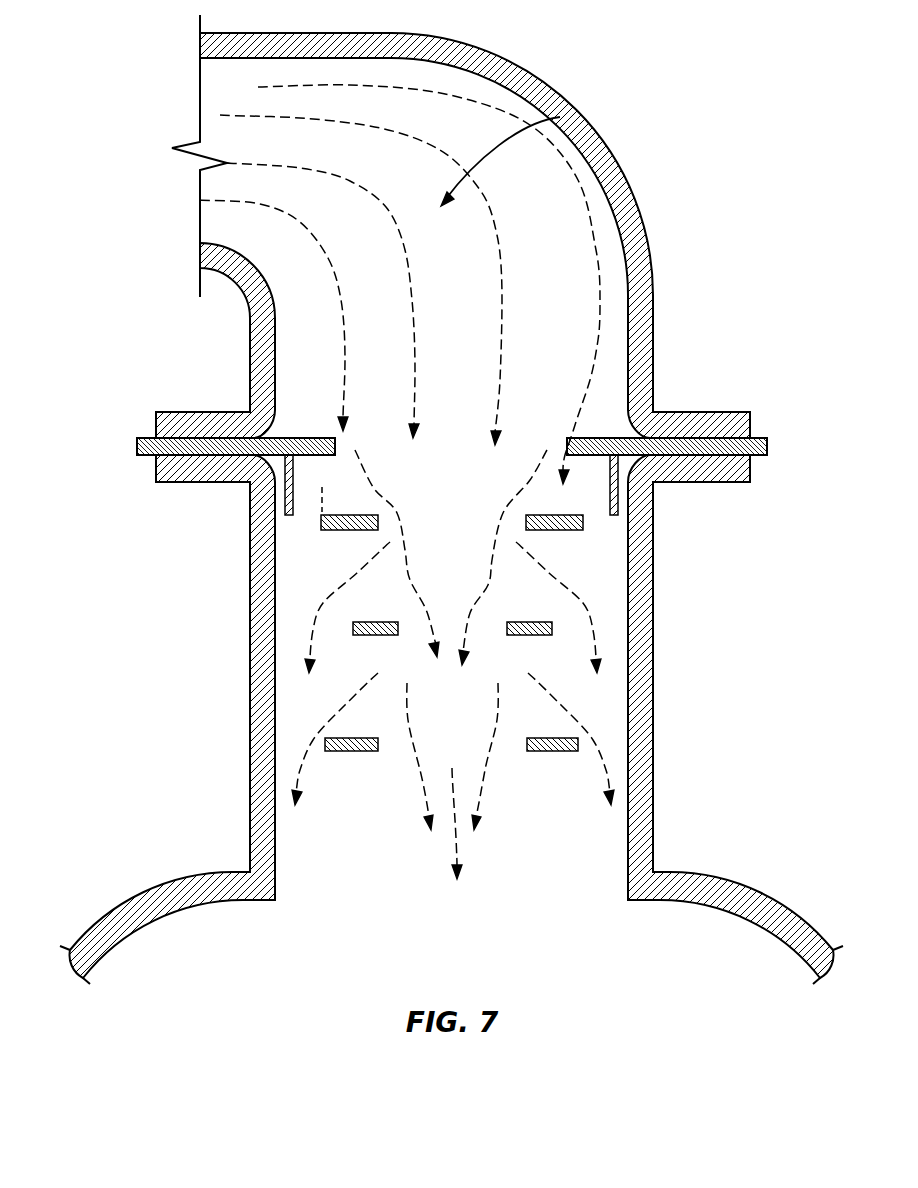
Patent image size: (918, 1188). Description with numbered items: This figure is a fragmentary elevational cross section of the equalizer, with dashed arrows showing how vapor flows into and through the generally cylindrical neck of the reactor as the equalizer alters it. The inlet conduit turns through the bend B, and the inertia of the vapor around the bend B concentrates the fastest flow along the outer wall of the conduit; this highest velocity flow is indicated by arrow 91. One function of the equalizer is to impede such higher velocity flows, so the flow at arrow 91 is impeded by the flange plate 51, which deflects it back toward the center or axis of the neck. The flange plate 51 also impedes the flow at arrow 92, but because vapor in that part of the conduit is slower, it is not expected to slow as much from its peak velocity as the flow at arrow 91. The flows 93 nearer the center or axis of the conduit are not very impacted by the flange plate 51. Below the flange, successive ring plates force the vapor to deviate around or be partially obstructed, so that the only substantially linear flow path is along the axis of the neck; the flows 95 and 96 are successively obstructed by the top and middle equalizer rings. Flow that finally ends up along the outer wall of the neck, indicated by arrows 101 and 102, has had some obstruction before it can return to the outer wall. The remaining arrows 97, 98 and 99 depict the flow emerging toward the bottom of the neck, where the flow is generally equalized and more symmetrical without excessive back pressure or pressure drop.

The flange plate 51 is at (195, 434).
The arrow showing highest vapor velocity flow 91 is at (598, 331).
The arrow showing slower flow 92 is at (336, 297).
The central flows 93 is at (418, 306).
The flow obstructed by equalizer rings 95 is at (522, 499).
The flow obstructed by equalizer rings 96 is at (395, 505).
The central exit flow 97 is at (456, 837).
The exit flow stream 98 is at (492, 741).
The exit flow stream 99 is at (408, 702).
The arrow showing flow along outer wall of neck 101 is at (343, 707).
The arrow showing flow along outer wall of neck 102 is at (563, 707).
The bend B is at (560, 117).